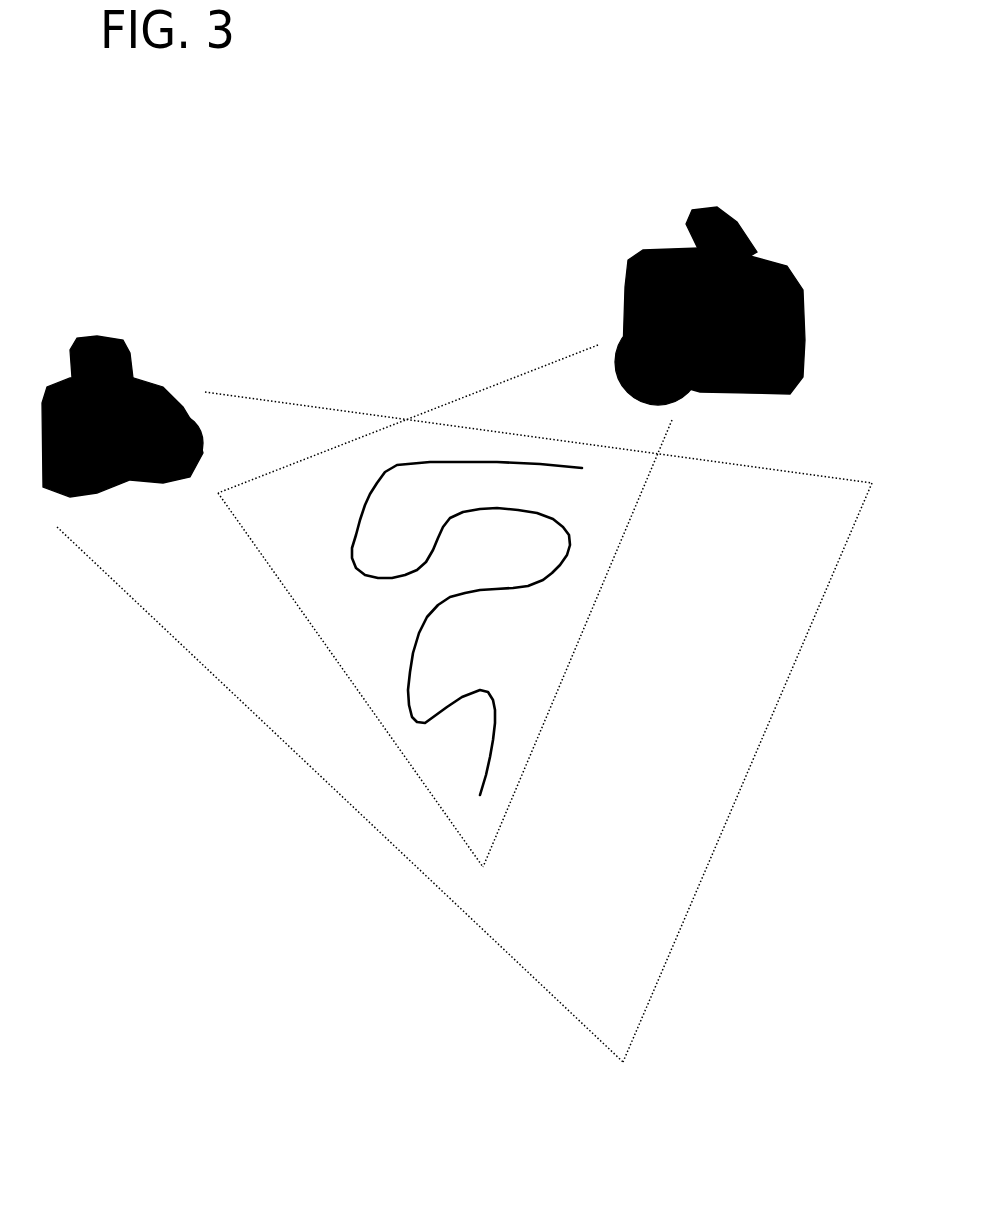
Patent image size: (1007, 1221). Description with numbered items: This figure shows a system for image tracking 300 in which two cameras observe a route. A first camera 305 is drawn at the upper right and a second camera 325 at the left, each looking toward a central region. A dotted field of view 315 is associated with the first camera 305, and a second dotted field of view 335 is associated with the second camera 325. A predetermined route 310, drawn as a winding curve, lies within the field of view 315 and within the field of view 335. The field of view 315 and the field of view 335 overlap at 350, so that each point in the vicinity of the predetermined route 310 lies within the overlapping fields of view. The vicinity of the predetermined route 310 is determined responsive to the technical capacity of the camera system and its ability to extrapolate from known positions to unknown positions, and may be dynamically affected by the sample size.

The system for image tracking 300 is at (478, 113).
The first camera 305 is at (588, 266).
The second camera 325 is at (180, 323).
The field of view 315 is at (686, 436).
The field of view 335 is at (716, 890).
The predetermined route 310 is at (466, 639).
The overlap 350 is at (327, 538).